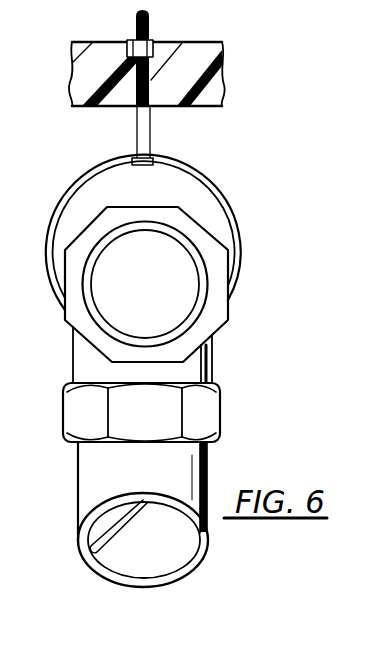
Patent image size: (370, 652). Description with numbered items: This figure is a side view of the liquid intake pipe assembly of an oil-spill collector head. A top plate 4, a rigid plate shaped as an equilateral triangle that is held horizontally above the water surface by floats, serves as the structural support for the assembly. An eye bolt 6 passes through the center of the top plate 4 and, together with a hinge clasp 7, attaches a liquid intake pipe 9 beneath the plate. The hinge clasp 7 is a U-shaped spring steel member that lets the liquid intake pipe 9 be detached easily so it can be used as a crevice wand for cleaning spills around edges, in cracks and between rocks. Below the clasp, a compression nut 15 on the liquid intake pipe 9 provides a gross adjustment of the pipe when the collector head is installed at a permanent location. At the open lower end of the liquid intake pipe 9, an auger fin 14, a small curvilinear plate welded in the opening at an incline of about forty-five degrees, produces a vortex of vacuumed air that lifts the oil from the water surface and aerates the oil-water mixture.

The top plate 4 is at (202, 45).
The eye bolt 6 is at (150, 133).
The hinge clasp 7 is at (212, 180).
The liquid intake pipe 9 is at (213, 362).
The auger fin 14 is at (93, 553).
The compression nut 15 is at (216, 425).